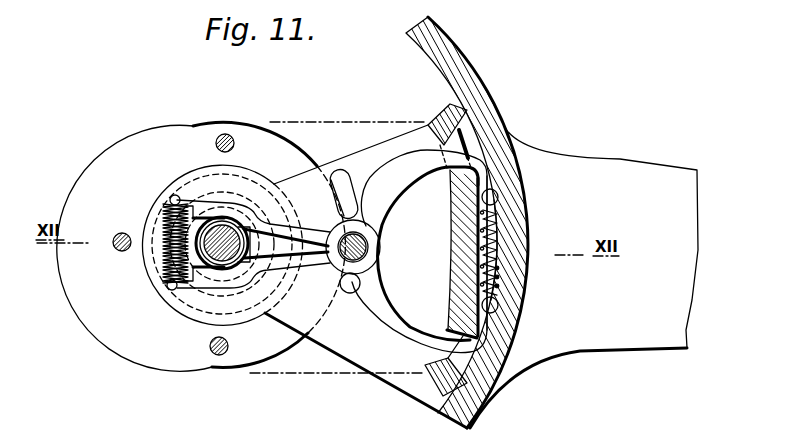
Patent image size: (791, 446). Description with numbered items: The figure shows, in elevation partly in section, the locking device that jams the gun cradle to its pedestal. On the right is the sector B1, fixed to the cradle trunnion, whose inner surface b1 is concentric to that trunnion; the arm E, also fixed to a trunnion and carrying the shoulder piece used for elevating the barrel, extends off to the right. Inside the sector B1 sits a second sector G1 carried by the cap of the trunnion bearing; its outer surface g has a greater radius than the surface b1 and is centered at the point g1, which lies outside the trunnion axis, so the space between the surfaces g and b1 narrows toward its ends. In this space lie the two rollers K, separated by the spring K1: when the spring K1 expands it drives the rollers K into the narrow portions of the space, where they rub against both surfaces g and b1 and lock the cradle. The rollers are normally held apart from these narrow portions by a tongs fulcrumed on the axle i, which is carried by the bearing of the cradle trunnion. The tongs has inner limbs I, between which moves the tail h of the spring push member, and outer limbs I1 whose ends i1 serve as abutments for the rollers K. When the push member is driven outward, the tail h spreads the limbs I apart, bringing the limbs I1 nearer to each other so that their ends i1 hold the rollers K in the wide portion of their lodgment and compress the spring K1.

The sector B1 is at (475, 97).
The arm E is at (613, 338).
The limbs of the tongs I1 is at (398, 178).
The limbs of the tongs I is at (283, 226).
The axle i is at (359, 250).
The ends of the limbs i1 is at (490, 174).
The sector G1 is at (470, 223).
The outer surface of the sector G1 g is at (480, 253).
The center of the surface g g1 is at (81, 250).
The tail of the push member h is at (206, 270).
The rollers K is at (498, 200).
The spring K1 is at (500, 278).
The inner surface of the sector B1 b1 is at (527, 243).